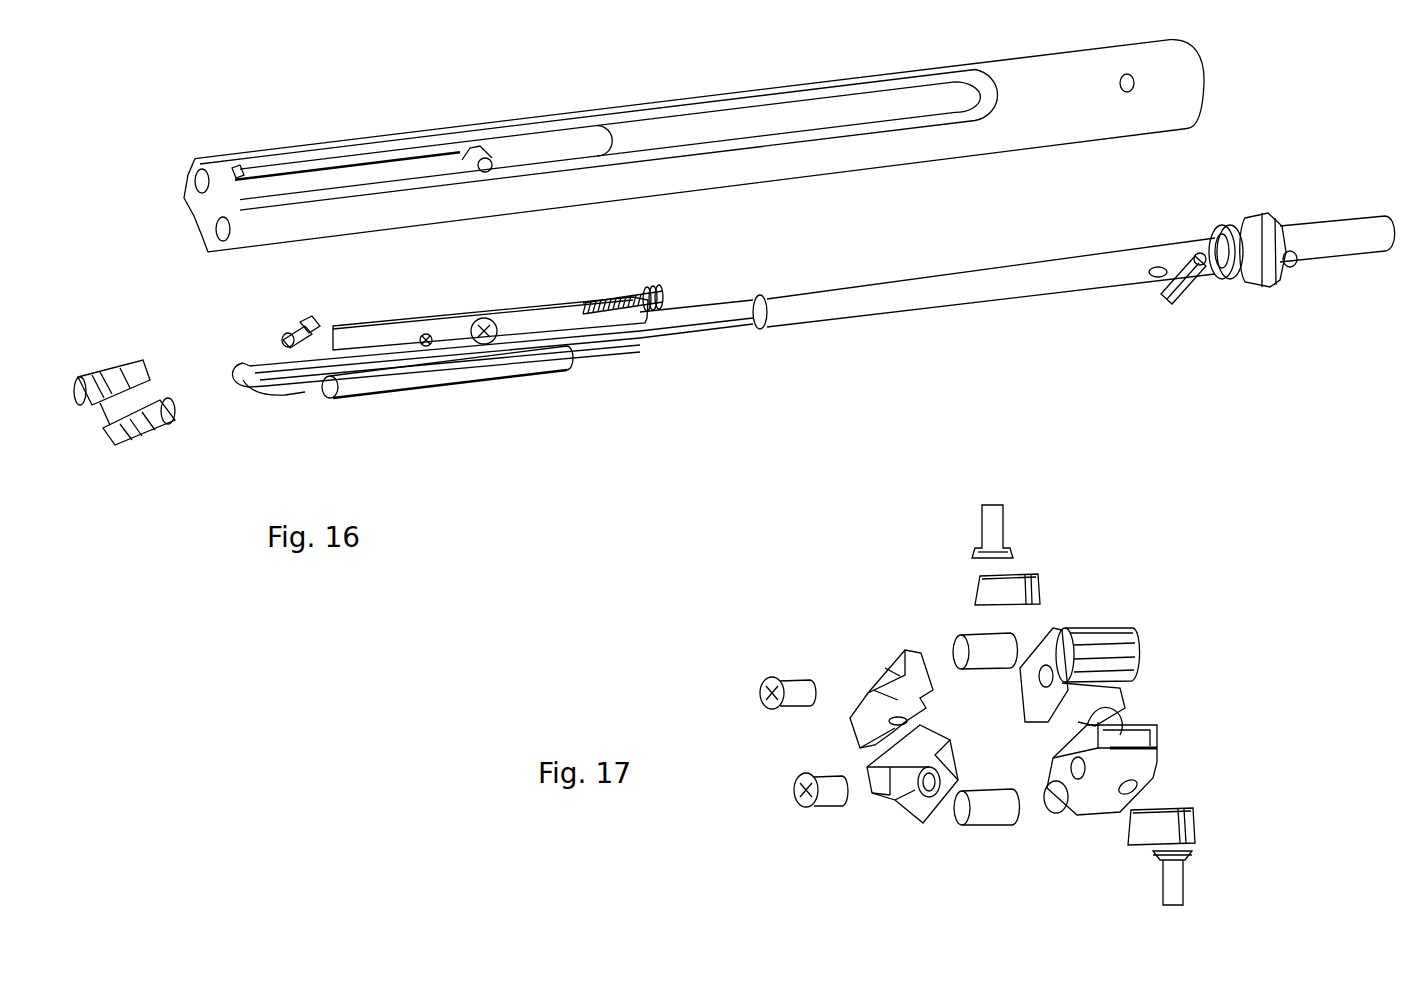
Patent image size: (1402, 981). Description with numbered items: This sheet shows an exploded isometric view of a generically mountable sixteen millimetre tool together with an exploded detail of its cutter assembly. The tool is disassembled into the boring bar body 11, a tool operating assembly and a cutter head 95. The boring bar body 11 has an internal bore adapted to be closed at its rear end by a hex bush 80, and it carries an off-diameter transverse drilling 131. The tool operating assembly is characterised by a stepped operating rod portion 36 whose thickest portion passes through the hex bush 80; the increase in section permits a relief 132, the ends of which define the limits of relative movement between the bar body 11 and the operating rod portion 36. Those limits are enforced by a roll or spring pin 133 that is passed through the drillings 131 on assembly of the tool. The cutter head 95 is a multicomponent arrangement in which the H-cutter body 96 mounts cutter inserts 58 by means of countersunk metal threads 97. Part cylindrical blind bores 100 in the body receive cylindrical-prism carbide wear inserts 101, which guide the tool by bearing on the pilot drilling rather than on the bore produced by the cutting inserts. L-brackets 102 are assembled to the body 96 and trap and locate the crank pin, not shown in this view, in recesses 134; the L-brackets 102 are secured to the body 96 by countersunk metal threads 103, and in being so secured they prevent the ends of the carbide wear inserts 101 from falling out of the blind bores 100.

In FIG. 16, the boring bar body 11 is at (1023, 133).
In FIG. 16, the off-diameter transverse drilling 131 is at (1131, 92).
In FIG. 16, the stepped operating rod portion 36 is at (853, 303).
In FIG. 16, the roll or spring pin 133 is at (1166, 308).
In FIG. 16, the relief 132 is at (1212, 272).
In FIG. 16, the hex bush 80 is at (1262, 288).
In FIG. 16, the cutter head 95 is at (152, 388).
In FIG. 17, the CSK metal threads 97 is at (1004, 524).
In FIG. 17, the cutter inserts 58 is at (1041, 590).
In FIG. 17, the cylindrical-prism carbide wear inserts 101 is at (975, 632).
In FIG. 17, the L-brackets 102 is at (883, 687).
In FIG. 17, the CSK metal threads 103 is at (792, 708).
In FIG. 17, the recesses 134 is at (907, 720).
In FIG. 17, the part cylindrical blind bores 100 is at (1065, 628).
In FIG. 17, the H-cutter body 96 is at (1147, 783).